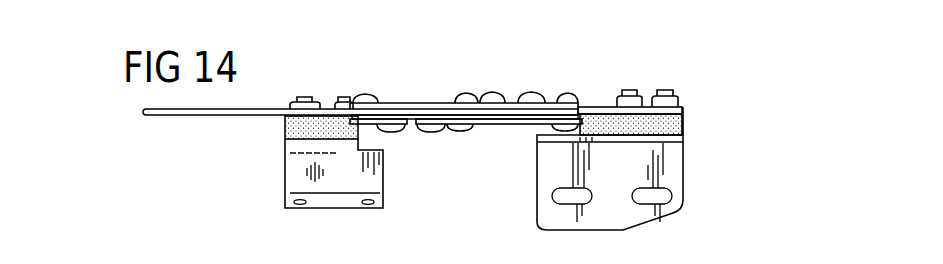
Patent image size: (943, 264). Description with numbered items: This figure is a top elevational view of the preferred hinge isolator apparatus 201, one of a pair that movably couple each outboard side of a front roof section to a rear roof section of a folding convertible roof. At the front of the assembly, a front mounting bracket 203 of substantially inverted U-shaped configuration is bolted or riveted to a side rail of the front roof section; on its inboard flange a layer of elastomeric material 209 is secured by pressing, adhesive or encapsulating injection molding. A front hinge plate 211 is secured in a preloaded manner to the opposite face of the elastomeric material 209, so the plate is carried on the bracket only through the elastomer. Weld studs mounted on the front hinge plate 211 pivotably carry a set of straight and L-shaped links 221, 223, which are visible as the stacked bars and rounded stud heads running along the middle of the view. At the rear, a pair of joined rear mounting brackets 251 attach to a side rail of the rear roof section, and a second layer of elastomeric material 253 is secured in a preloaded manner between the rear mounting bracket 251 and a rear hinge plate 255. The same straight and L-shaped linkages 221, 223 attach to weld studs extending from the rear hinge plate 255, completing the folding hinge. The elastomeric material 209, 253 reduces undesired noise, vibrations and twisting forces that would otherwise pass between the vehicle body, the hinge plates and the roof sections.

The hinge isolator apparatus 201 is at (120, 146).
The front mounting bracket 203 is at (290, 178).
The elastomeric material 209 is at (287, 128).
The front hinge plate 211 is at (267, 109).
The straight link 221 is at (552, 103).
The L-shaped link 223 is at (413, 102).
The rear mounting bracket 251 is at (673, 168).
The elastomeric material 253 is at (677, 125).
The rear hinge plate 255 is at (608, 108).